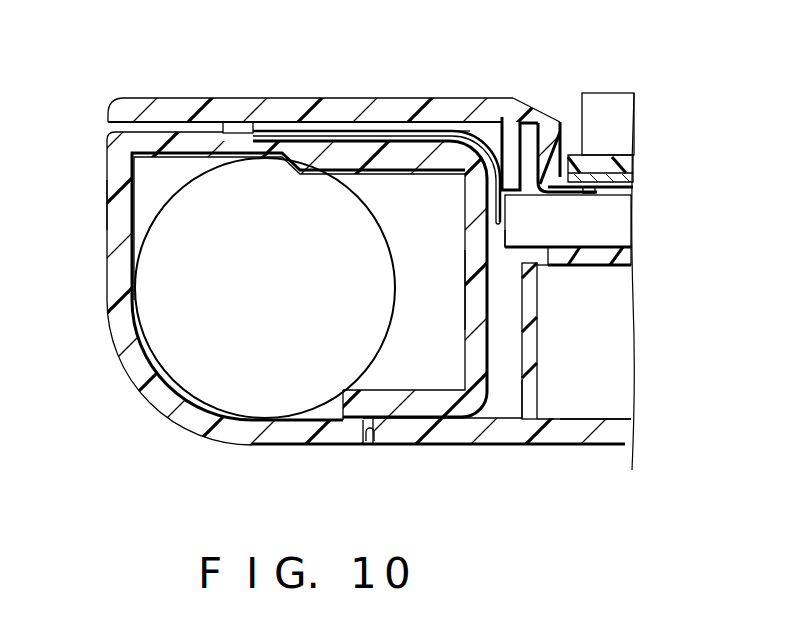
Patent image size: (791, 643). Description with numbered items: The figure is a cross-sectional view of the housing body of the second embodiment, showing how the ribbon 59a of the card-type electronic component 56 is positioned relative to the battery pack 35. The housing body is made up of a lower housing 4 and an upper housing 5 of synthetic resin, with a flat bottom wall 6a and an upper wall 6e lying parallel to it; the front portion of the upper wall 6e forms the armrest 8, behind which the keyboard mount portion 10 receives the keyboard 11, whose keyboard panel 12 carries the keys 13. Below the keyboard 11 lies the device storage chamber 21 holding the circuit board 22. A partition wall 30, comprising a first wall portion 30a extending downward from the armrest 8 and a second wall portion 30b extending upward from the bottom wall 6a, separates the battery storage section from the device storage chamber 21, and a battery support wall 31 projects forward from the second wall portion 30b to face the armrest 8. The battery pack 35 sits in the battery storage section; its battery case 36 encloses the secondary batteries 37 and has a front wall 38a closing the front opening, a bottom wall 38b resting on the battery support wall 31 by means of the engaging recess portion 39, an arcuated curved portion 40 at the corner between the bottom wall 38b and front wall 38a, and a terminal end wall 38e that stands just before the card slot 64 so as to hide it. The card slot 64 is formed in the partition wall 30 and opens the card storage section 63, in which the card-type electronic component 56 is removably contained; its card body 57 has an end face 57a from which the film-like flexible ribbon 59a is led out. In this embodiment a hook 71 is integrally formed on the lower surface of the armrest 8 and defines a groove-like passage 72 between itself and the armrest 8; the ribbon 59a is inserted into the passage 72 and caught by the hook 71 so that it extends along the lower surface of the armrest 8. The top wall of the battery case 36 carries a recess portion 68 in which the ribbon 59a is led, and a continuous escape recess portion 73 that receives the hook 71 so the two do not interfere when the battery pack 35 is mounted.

The lower housing 4 is at (523, 443).
The upper housing 5 is at (455, 100).
The bottom wall 6a is at (605, 433).
The upper wall 6e is at (135, 112).
The armrest 8 is at (298, 130).
The keyboard mount portion 10 is at (565, 132).
The keyboard 11 is at (640, 90).
The keyboard panel 12 is at (627, 164).
The keys 13 is at (625, 127).
The device storage chamber 21 is at (628, 353).
The circuit board 22 is at (628, 266).
The partition wall 30 is at (537, 357).
The first wall portion 30a is at (530, 155).
The second wall portion 30b is at (538, 393).
The battery support wall 31 is at (440, 433).
The battery pack 35 is at (104, 262).
The battery case 36 is at (110, 335).
The secondary batteries 37 is at (383, 262).
The front wall 38a is at (107, 208).
The bottom wall 38b is at (285, 433).
The terminal end wall 38e is at (463, 318).
The engaging recess portion 39 is at (373, 440).
The curved portion 40 is at (150, 407).
The card-type electronic component 56 is at (620, 226).
The card body 57 is at (590, 250).
The end face 57a is at (465, 293).
The ribbon 59a is at (486, 124).
The card storage section 63 is at (630, 188).
The card slot 64 is at (533, 230).
The recess portion 68 is at (234, 122).
The hook 71 is at (402, 148).
The passage 72 is at (398, 135).
The escape recess portion 73 is at (372, 124).